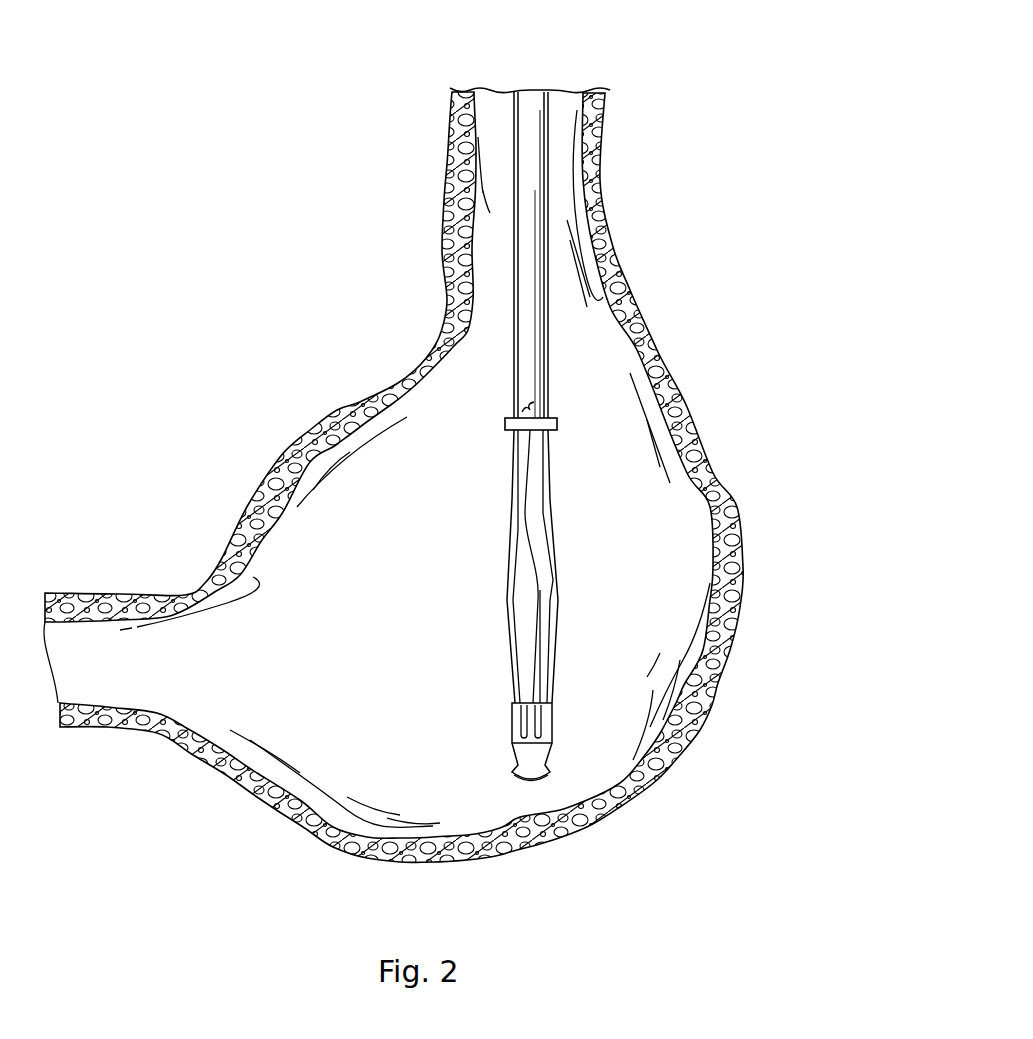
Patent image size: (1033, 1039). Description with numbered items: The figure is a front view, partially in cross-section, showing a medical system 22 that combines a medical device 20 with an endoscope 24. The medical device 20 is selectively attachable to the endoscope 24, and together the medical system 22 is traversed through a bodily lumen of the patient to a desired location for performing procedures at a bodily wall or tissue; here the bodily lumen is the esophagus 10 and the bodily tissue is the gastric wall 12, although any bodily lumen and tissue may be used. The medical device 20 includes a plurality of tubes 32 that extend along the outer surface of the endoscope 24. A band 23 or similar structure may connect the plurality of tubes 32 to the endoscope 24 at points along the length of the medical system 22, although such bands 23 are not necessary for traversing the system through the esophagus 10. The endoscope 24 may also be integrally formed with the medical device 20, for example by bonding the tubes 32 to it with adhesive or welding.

The esophagus 10 is at (455, 181).
The gastric wall 12 is at (577, 833).
The medical device 20 is at (407, 513).
The medical system 22 is at (665, 108).
The band 23 is at (557, 420).
The endoscope 24 is at (523, 157).
The plurality of tubes 32 is at (553, 522).